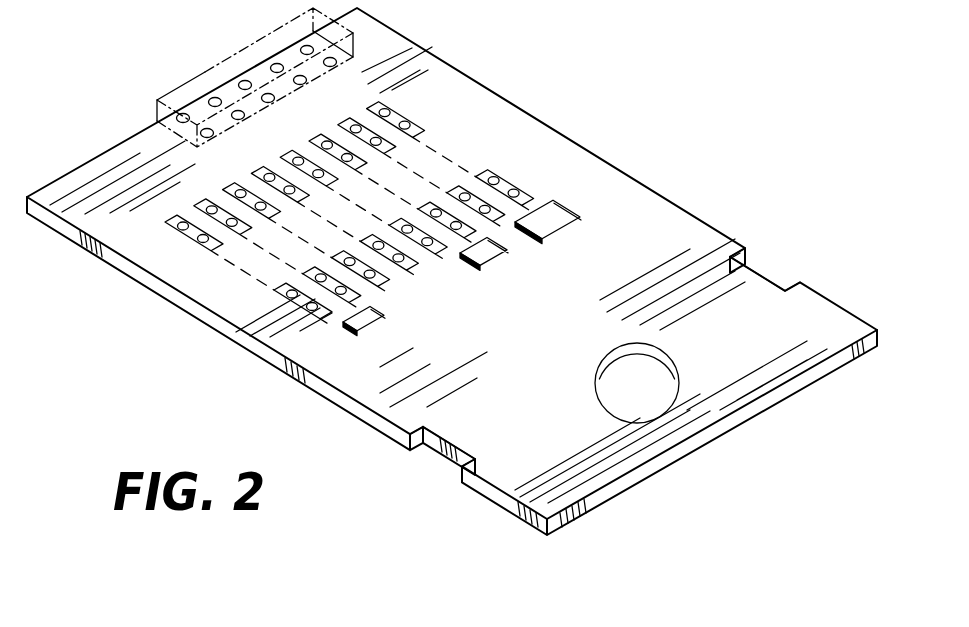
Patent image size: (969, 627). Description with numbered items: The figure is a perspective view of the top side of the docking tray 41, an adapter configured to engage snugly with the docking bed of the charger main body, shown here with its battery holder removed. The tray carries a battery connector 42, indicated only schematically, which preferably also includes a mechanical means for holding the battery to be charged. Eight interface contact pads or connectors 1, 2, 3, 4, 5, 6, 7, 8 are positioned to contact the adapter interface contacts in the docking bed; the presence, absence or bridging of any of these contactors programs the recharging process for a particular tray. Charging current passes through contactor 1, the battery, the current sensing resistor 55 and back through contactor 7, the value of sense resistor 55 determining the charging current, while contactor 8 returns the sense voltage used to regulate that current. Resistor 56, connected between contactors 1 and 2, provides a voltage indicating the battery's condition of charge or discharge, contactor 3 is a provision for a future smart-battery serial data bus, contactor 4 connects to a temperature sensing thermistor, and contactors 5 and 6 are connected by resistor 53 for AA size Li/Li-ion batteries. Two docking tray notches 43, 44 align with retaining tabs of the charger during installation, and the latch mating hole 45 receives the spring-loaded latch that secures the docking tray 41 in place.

The interface contact pad 1 is at (245, 250).
The interface contact pad 2 is at (274, 234).
The interface contact pad 3 is at (303, 218).
The interface contact pad 4 is at (331, 201).
The interface contact pad 5 is at (360, 185).
The interface contact pad 6 is at (389, 169).
The interface contact pad 7 is at (418, 153).
The interface contact pad 8 is at (447, 137).
The docking tray 41 is at (813, 347).
The battery connector 42 is at (180, 90).
The docking tray notch 43 is at (440, 457).
The docking tray notch 44 is at (765, 284).
The latch mating hole 45 is at (658, 385).
The resistor 53 is at (500, 252).
The current sensing resistor 55 is at (578, 213).
The resistor 56 is at (377, 317).